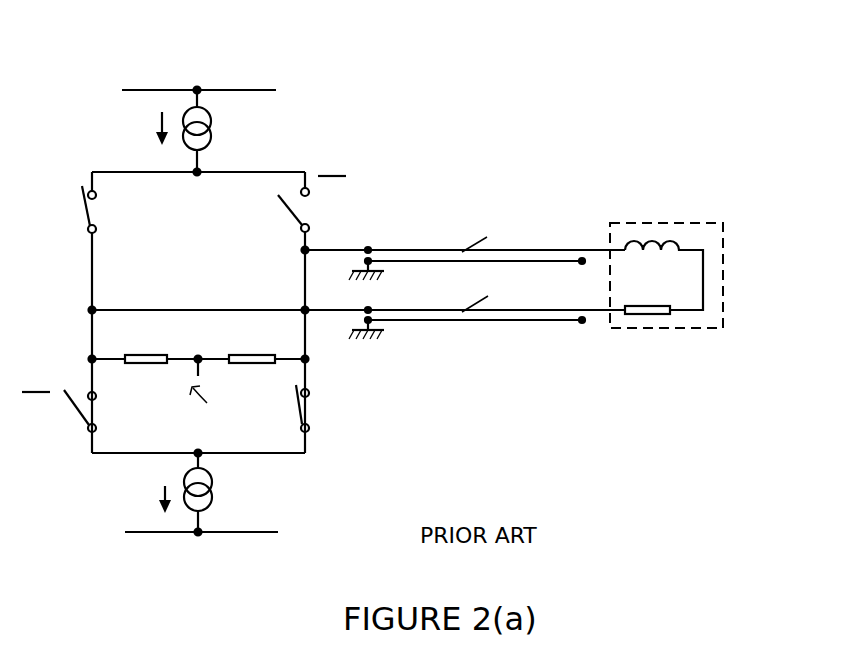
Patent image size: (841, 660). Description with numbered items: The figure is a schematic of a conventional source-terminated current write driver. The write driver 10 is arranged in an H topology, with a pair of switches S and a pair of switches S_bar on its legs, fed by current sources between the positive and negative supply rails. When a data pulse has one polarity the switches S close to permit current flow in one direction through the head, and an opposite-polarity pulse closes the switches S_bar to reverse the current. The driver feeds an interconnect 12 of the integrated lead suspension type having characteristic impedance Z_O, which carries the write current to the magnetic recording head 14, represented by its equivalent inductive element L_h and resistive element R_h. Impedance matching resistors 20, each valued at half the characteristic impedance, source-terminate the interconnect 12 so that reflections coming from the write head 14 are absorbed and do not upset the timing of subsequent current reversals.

The write driver 10 is at (233, 291).
The interconnect 12 is at (439, 190).
The magnetic recording head 14 is at (652, 204).
The impedance matching resistors 20 is at (146, 374).